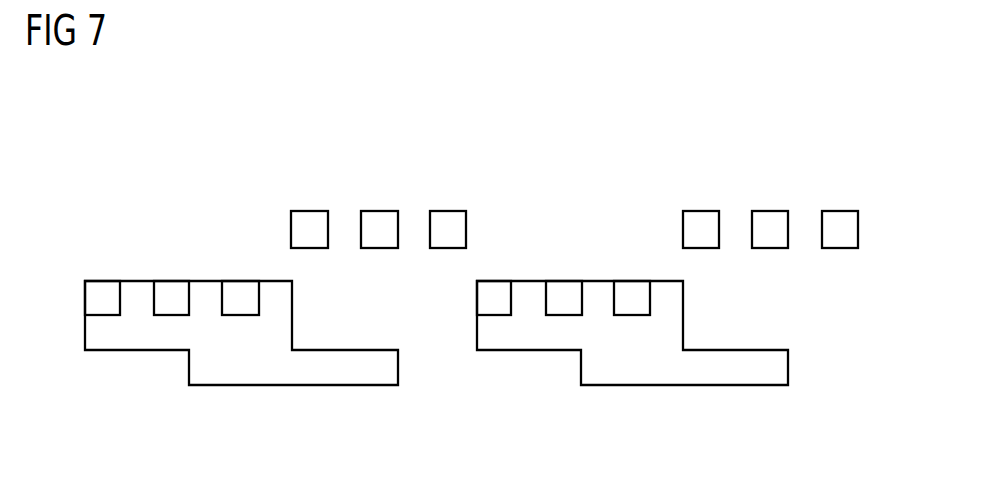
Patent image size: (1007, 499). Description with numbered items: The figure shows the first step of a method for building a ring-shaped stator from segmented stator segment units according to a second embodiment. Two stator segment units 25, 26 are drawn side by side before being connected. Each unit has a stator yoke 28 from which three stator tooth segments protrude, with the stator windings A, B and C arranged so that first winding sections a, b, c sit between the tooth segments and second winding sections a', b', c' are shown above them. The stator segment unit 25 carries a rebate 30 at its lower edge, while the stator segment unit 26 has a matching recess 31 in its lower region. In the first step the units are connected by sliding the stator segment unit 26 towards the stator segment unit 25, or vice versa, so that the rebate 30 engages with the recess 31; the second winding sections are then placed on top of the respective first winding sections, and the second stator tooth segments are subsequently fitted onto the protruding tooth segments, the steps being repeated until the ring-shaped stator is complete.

The stator segment unit 25 is at (103, 180).
The stator segment unit 26 is at (747, 137).
The stator yoke 28 is at (737, 365).
The rebate 30 is at (345, 365).
The recess 31 is at (493, 362).